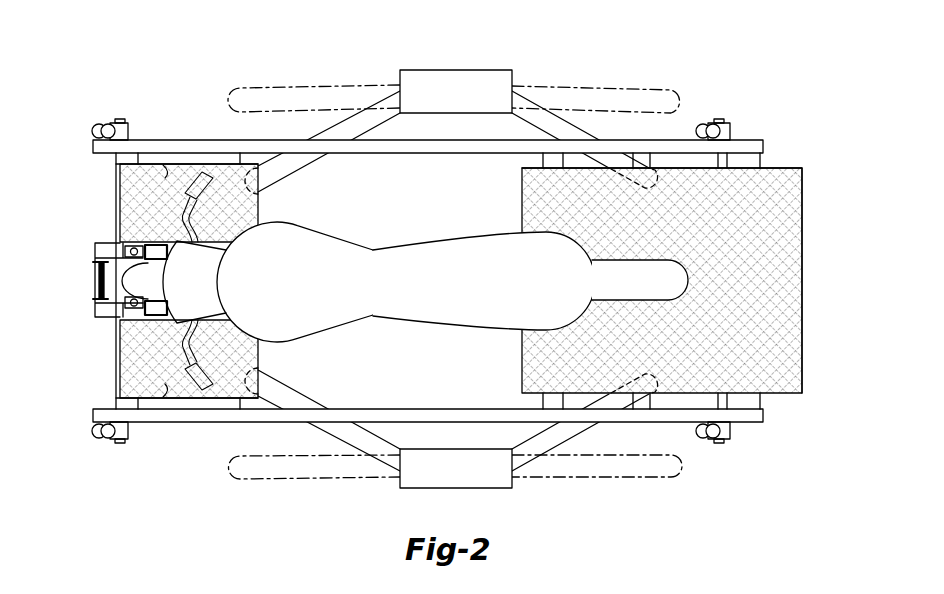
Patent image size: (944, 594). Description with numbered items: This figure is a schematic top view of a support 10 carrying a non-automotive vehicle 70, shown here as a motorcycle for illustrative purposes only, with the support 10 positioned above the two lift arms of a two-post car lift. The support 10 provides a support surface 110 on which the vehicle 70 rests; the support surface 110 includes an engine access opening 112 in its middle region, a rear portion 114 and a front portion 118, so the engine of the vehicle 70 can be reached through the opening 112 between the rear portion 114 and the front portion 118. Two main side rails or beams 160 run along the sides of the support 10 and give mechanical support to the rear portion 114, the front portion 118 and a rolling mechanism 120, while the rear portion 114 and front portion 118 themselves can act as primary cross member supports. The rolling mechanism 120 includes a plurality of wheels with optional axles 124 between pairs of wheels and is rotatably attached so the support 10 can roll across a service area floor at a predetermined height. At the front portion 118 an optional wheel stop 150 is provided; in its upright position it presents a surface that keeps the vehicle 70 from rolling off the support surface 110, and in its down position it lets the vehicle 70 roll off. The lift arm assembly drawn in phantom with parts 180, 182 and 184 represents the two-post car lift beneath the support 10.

The support 10 is at (801, 397).
The non-automotive vehicle 70 is at (405, 241).
The support surface 110 is at (802, 166).
The engine access opening 112 is at (340, 388).
The rear portion 114 is at (722, 232).
The front portion 118 is at (166, 177).
The rolling mechanism 120 is at (96, 123).
The axle 124 is at (116, 370).
The wheel stop 150 is at (93, 288).
The main side rail 160 is at (212, 139).
The support assembly 180 is at (471, 68).
The support arm 182 is at (327, 128).
The mounting block 184 is at (420, 71).